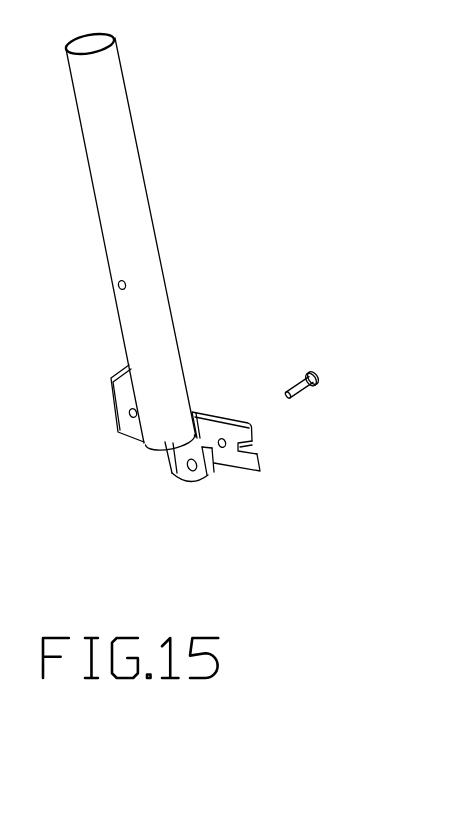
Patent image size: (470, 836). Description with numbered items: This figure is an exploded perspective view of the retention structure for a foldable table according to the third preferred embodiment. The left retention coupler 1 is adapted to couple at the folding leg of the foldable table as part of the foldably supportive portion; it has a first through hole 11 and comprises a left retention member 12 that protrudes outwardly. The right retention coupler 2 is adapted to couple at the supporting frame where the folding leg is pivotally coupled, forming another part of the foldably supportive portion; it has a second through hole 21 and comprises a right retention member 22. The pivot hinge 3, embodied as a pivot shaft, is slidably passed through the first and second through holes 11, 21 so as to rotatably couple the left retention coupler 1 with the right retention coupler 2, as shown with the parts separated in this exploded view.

The left retention coupler 1 is at (178, 433).
The first through hole 11 is at (185, 478).
The left retention member 12 is at (205, 468).
The right retention coupler 2 is at (225, 417).
The second through hole 21 is at (227, 450).
The right retention member 22 is at (245, 447).
The pivot hinge 3 is at (318, 368).